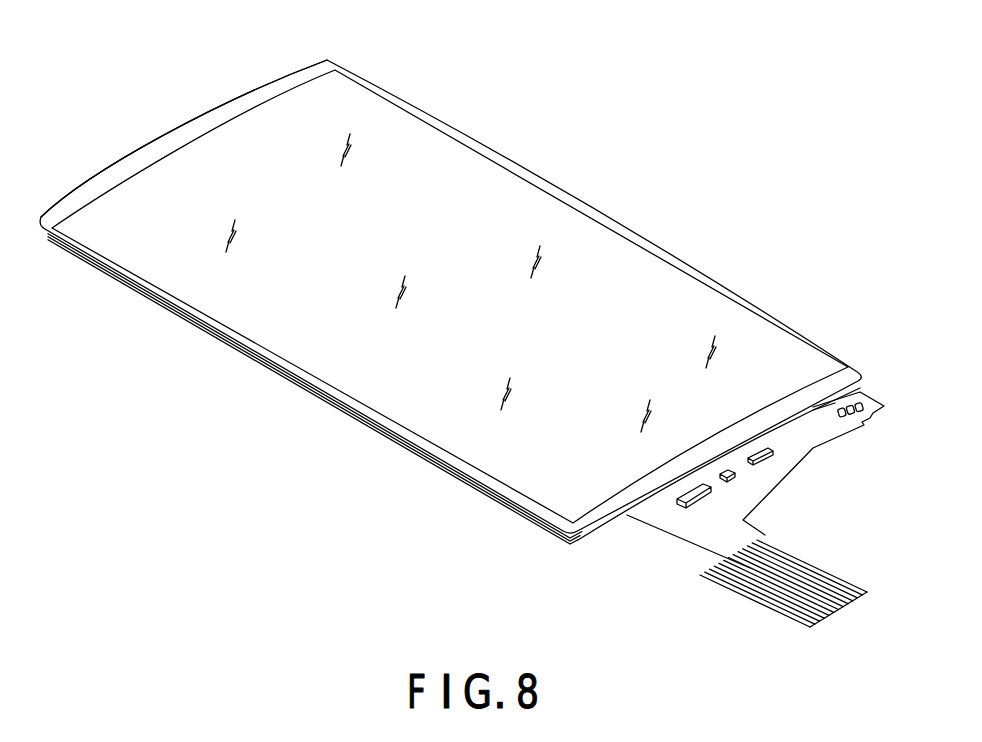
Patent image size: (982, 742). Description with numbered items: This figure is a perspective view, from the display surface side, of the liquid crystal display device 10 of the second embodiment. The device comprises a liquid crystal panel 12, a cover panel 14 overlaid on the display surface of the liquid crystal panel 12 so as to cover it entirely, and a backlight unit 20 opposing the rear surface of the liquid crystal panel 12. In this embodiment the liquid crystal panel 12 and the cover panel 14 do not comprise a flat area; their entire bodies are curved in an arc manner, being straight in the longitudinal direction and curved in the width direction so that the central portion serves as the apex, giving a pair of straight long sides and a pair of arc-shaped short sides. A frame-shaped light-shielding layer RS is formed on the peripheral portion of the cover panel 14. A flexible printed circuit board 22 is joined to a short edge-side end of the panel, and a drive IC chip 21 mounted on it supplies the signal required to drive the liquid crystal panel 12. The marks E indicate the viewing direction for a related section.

The liquid crystal display device 10 is at (471, 100).
The liquid crystal panel 12 is at (178, 263).
The cover panel 14 is at (477, 193).
The backlight unit 20 is at (414, 471).
The drive IC chip 21 is at (697, 503).
The flexible printed circuit board 22 is at (755, 490).
The light-shielding layer RS is at (175, 131).
The section view direction E is at (628, 182).